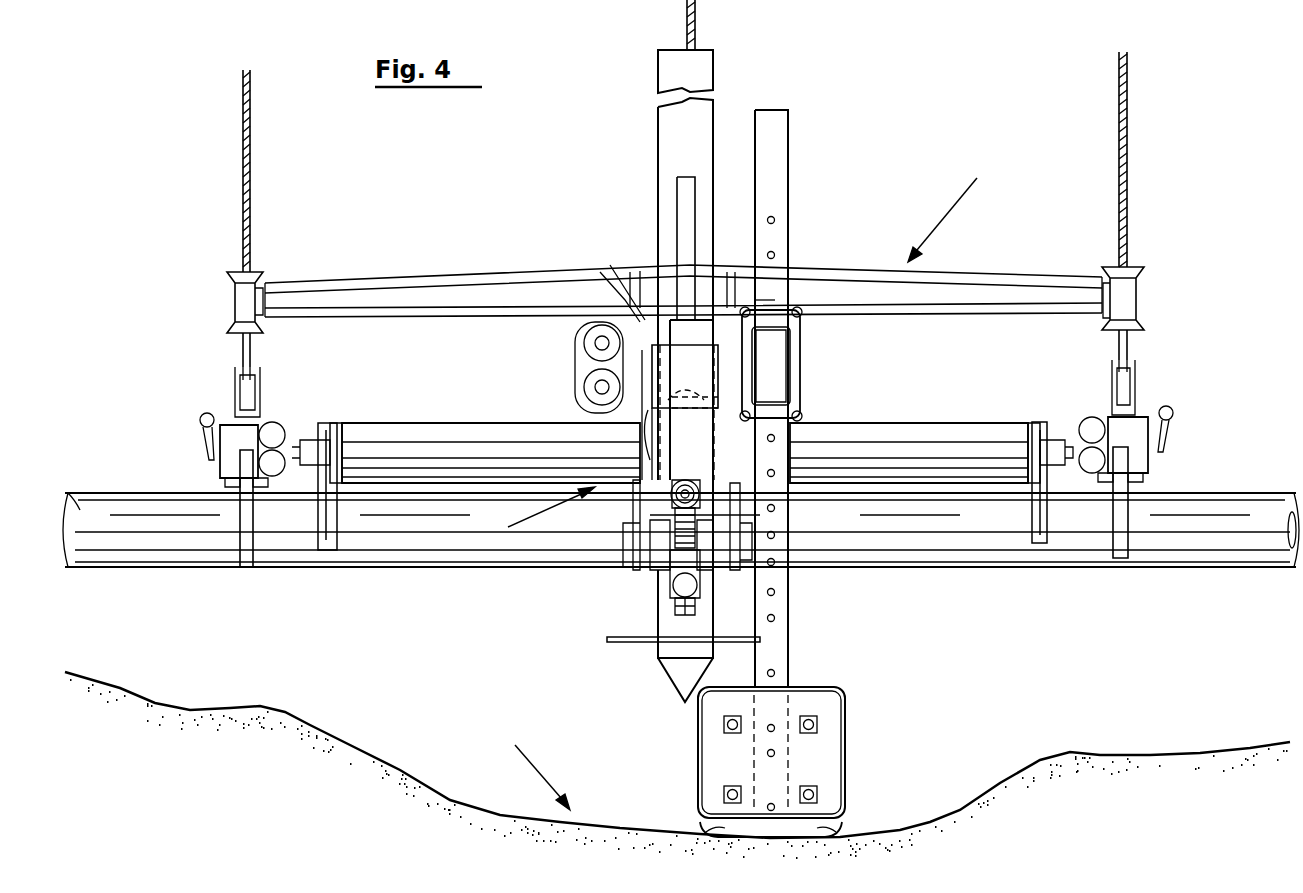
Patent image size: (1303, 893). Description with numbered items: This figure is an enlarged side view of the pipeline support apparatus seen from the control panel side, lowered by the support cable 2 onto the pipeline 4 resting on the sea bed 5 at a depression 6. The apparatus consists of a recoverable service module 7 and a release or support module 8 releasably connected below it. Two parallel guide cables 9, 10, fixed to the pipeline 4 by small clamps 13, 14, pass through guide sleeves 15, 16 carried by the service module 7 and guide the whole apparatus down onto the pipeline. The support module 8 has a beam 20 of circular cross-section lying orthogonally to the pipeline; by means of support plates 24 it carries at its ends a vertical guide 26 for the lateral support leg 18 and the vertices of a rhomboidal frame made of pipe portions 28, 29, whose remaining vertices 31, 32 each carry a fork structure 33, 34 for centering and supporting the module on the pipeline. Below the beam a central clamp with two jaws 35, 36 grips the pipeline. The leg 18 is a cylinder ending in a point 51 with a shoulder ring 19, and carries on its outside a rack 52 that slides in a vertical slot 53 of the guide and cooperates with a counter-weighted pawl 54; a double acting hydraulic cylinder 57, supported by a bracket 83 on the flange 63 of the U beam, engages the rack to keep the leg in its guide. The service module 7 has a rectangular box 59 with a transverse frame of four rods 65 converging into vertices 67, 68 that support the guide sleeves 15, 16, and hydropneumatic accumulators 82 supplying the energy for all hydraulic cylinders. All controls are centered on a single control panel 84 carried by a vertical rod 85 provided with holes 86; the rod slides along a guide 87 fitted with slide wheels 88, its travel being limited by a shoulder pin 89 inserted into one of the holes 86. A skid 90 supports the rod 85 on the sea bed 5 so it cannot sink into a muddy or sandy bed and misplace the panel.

The support cable 2 is at (697, 12).
The pipeline 4 is at (148, 545).
The sea bed 5 is at (250, 704).
The depression 6 is at (535, 766).
The recoverable service module 7 is at (945, 214).
The release or support module 8 is at (544, 518).
The guide cable 9 is at (244, 118).
The guide cable 10 is at (1126, 125).
The small clamp 13 is at (228, 466).
The small clamp 14 is at (1140, 460).
The guide sleeve 15 is at (238, 300).
The guide sleeve 16 is at (1136, 300).
The lateral support leg 18 is at (664, 142).
The shoulder ring 19 is at (612, 641).
The beam 20 is at (663, 467).
The support plate 24 is at (650, 455).
The vertical guide 26 is at (672, 330).
The pipe portion 28 is at (895, 440).
The pipe portion 29 is at (460, 440).
The vertex 31 is at (338, 432).
The vertex 32 is at (1035, 430).
The fork structure 33 is at (325, 515).
The fork structure 34 is at (1040, 500).
The jaw 35 is at (655, 560).
The jaw 36 is at (745, 562).
The point 51 is at (680, 680).
The rack 52 is at (686, 220).
The vertical slot 53 is at (700, 520).
The pawl 54 is at (680, 588).
The double acting hydraulic cylinder 57 is at (692, 494).
The rectangular box 59 is at (613, 300).
The flange 63 is at (765, 350).
The rod 65 is at (410, 283).
The vertex 67 is at (262, 290).
The vertex 68 is at (1107, 290).
The hydropneumatic accumulator 82 is at (584, 343).
The bracket 83 is at (665, 380).
The control panel 84 is at (828, 748).
The vertical rod 85 is at (762, 164).
The hole 86 is at (775, 255).
The guide 87 is at (803, 375).
The slide wheel 88 is at (748, 305).
The shoulder pin 89 is at (776, 300).
The skid 90 is at (842, 824).